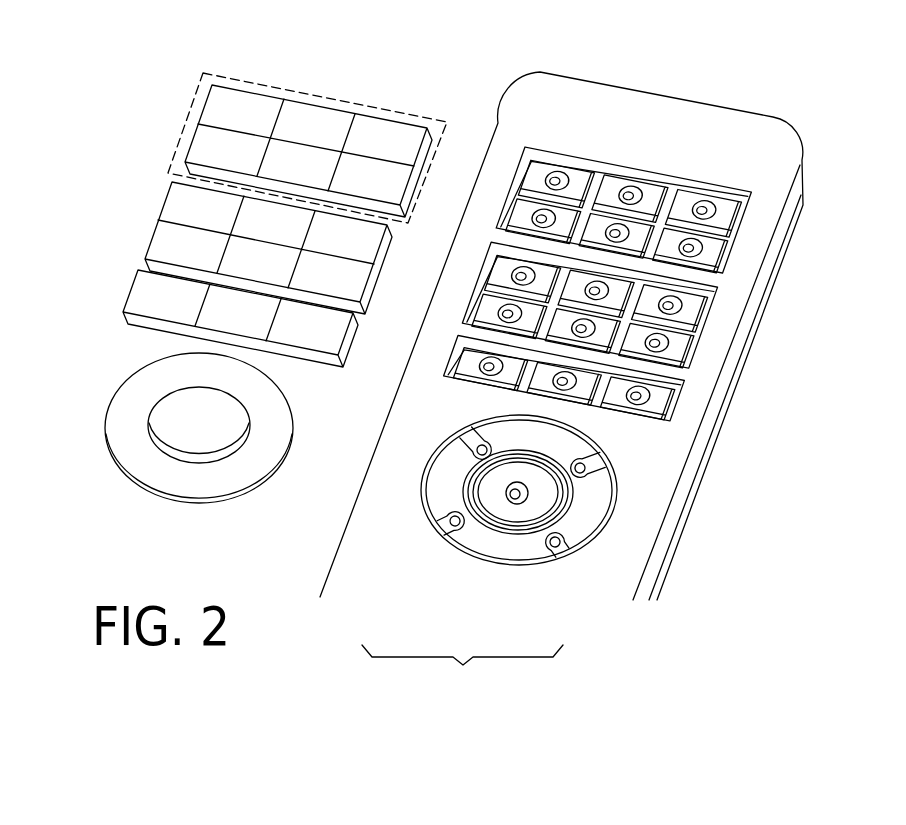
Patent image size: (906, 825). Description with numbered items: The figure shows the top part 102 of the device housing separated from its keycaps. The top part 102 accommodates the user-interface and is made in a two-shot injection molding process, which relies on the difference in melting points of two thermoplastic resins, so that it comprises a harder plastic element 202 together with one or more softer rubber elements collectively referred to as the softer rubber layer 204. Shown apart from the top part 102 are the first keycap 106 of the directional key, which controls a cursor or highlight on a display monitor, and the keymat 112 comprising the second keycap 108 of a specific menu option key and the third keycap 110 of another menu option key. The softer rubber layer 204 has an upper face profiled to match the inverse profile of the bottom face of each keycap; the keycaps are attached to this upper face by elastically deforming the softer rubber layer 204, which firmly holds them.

The top part 102 is at (478, 703).
The first keycap 106 is at (130, 413).
The second keycap 108 is at (298, 163).
The third keycap 110 is at (218, 110).
The keymat 112 is at (185, 129).
The harder plastic element 202 is at (398, 560).
The softer rubber layer 204 is at (650, 195).